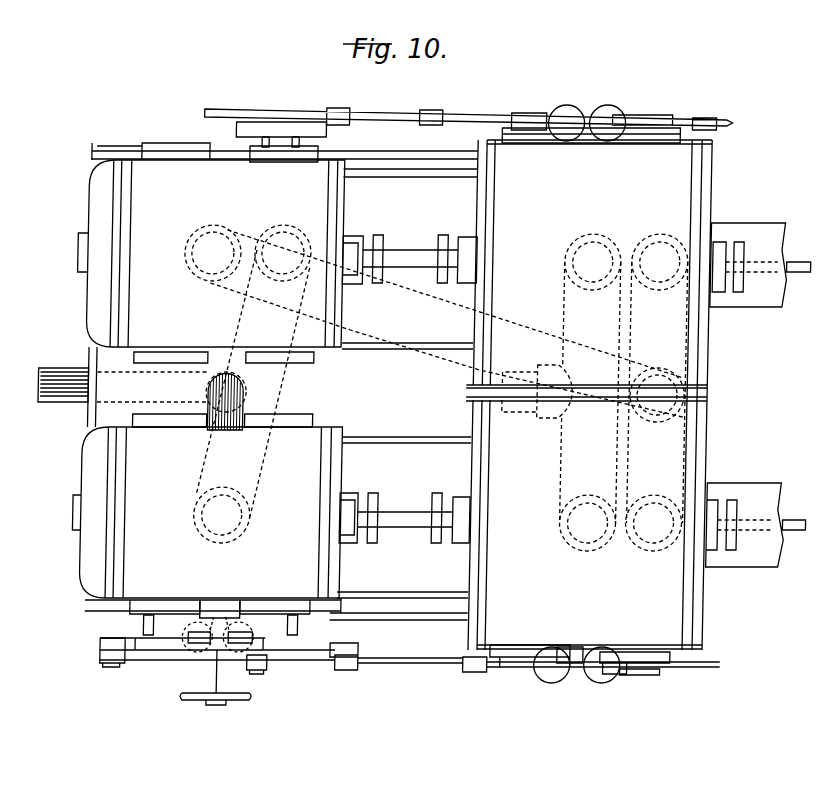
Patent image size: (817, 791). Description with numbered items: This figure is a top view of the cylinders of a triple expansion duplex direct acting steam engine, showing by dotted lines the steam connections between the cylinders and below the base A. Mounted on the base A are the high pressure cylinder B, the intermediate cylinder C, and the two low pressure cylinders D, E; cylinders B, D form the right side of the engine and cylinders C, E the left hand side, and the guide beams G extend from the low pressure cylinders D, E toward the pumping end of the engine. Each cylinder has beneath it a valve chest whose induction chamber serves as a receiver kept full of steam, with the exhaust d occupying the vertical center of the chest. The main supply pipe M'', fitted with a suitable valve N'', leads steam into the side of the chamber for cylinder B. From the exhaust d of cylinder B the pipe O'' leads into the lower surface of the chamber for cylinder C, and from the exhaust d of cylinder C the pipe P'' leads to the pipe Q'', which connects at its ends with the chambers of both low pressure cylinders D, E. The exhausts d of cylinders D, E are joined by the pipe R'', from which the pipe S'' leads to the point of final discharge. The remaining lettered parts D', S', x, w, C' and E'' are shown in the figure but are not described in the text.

The base A is at (243, 387).
The high pressure cylinder B is at (396, 503).
The intermediate cylinder C is at (400, 242).
The low pressure cylinder D is at (451, 502).
The low pressure cylinder E is at (457, 244).
The exhaust d is at (217, 233).
The guide beams G is at (758, 395).
The pipe O'' is at (258, 384).
The pipe P'' is at (447, 323).
The main supply pipe M'' is at (124, 399).
The pipe S'' is at (385, 499).
The pipe R'' is at (573, 392).
The pipe Q'' is at (657, 392).
The rods D' is at (446, 399).
The balls S' is at (582, 399).
The posts x is at (300, 144).
The rollers w is at (216, 635).
The end block C' is at (105, 647).
The bar E'' is at (278, 665).
The valve N'' is at (215, 687).